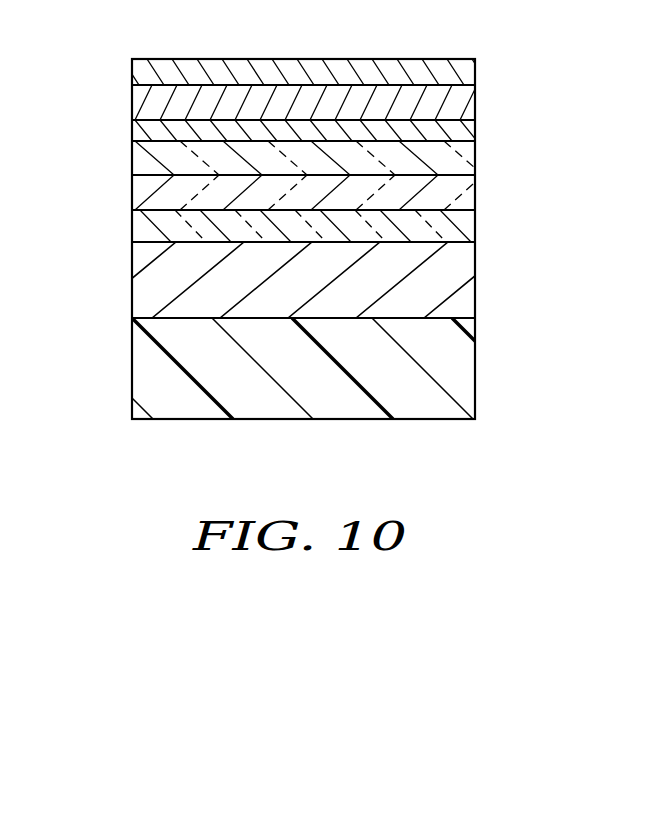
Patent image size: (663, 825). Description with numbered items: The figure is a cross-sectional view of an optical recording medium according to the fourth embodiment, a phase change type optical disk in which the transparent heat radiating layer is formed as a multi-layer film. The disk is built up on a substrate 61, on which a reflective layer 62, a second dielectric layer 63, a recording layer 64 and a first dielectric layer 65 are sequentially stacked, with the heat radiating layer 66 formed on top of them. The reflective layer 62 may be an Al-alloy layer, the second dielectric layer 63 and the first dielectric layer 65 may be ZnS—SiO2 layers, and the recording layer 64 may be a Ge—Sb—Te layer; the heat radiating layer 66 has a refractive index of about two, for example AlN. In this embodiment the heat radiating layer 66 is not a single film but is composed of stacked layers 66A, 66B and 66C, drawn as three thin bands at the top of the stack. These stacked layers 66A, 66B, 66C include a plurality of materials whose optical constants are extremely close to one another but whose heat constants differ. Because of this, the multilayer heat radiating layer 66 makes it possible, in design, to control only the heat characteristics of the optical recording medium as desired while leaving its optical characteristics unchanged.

The substrate 61 is at (132, 370).
The reflective layer 62 is at (132, 280).
The second dielectric layer 63 is at (132, 232).
The recording layer 64 is at (132, 192).
The first dielectric layer 65 is at (132, 154).
The heat radiating layer 66 is at (132, 104).
The stacked layer 66A is at (480, 135).
The stacked layer 66B is at (480, 97).
The stacked layer 66C is at (480, 72).